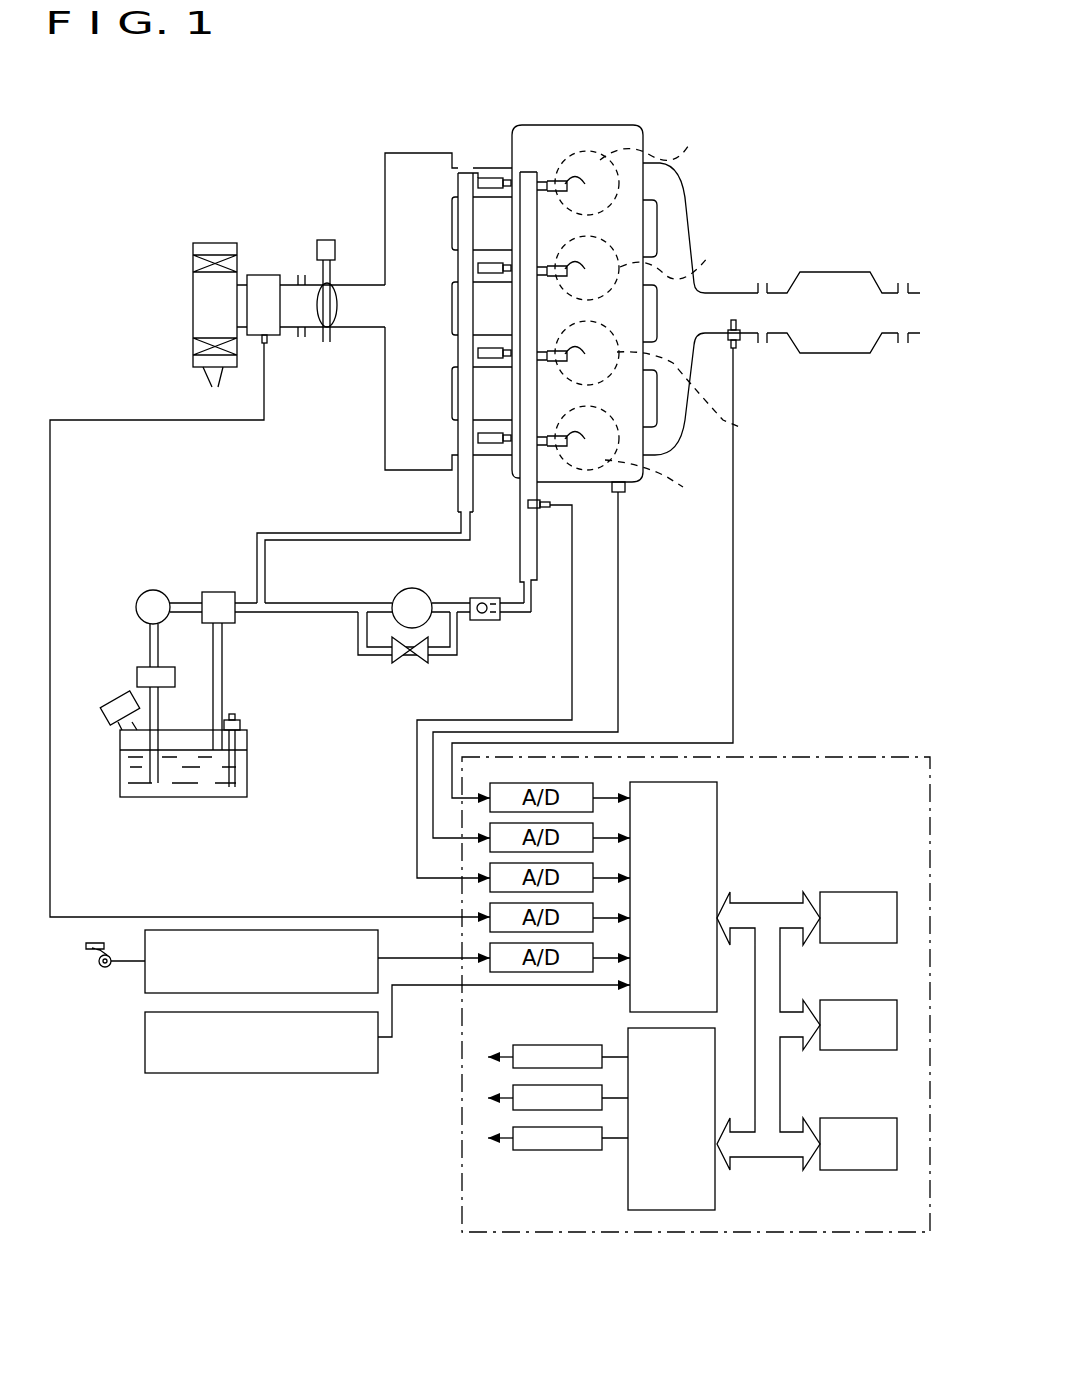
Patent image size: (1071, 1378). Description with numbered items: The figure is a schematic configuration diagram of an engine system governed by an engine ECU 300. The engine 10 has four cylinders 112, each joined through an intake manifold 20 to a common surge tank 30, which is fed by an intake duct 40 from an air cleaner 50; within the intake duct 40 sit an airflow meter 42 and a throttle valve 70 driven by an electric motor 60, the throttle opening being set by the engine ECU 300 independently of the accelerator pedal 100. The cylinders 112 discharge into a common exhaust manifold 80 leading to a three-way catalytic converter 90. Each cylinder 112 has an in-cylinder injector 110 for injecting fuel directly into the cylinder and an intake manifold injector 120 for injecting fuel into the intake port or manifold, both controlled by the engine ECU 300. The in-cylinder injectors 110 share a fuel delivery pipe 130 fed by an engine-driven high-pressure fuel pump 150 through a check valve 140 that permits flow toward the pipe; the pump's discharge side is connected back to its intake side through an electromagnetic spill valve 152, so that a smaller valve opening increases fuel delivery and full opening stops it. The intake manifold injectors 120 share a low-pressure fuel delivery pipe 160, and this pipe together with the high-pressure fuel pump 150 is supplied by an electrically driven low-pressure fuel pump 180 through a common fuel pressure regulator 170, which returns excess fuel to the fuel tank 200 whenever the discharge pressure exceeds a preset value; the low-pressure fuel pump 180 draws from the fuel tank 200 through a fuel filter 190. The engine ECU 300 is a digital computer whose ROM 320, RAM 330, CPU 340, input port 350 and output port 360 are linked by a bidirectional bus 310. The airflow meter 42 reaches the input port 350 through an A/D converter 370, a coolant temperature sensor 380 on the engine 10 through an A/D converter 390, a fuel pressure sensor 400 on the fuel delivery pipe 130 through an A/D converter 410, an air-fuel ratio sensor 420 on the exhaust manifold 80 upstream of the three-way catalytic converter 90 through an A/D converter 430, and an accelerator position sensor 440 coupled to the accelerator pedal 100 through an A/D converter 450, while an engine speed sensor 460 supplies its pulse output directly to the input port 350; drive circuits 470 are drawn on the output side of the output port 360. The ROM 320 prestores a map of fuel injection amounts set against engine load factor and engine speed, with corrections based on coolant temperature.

The engine 10 is at (650, 116).
The intake manifold 20 is at (468, 172).
The surge tank 30 is at (405, 152).
The intake duct 40 is at (360, 284).
The airflow meter 42 is at (264, 275).
The air cleaner 50 is at (193, 302).
The electric motor 60 is at (322, 240).
The throttle valve 70 is at (333, 310).
The exhaust manifold 80 is at (684, 205).
The three-way catalytic converter 90 is at (833, 257).
The accelerator pedal 100 is at (88, 955).
The in-cylinder injector 110 is at (578, 310).
The cylinder 112 is at (699, 314).
The intake manifold injector 120 is at (478, 187).
The fuel delivery pipe 130 is at (527, 168).
The check valve 140 is at (490, 622).
The high-pressure fuel pump 150 is at (396, 596).
The electromagnetic spill valve 152 is at (417, 662).
The fuel delivery pipe 160 is at (460, 492).
The fuel pressure regulator 170 is at (221, 592).
The low-pressure fuel pump 180 is at (158, 590).
The fuel filter 190 is at (147, 668).
The fuel tank 200 is at (183, 797).
The engine ECU 300 is at (866, 746).
The bidirectional bus 310 is at (763, 903).
The ROM 320 is at (845, 892).
The RAM 330 is at (845, 1000).
The CPU 340 is at (842, 1118).
The input port 350 is at (717, 808).
The output port 360 is at (715, 1192).
The A/D converter 370 is at (483, 913).
The coolant temperature sensor 380 is at (628, 497).
The A/D converter 390 is at (483, 833).
The fuel pressure sensor 400 is at (545, 512).
The A/D converter 410 is at (483, 873).
The air-fuel ratio sensor 420 is at (742, 348).
The A/D converter 430 is at (483, 793).
The accelerator position sensor 440 is at (143, 978).
The A/D converter 450 is at (483, 953).
The engine speed sensor 460 is at (143, 1042).
The drive circuit 470 is at (512, 1064).